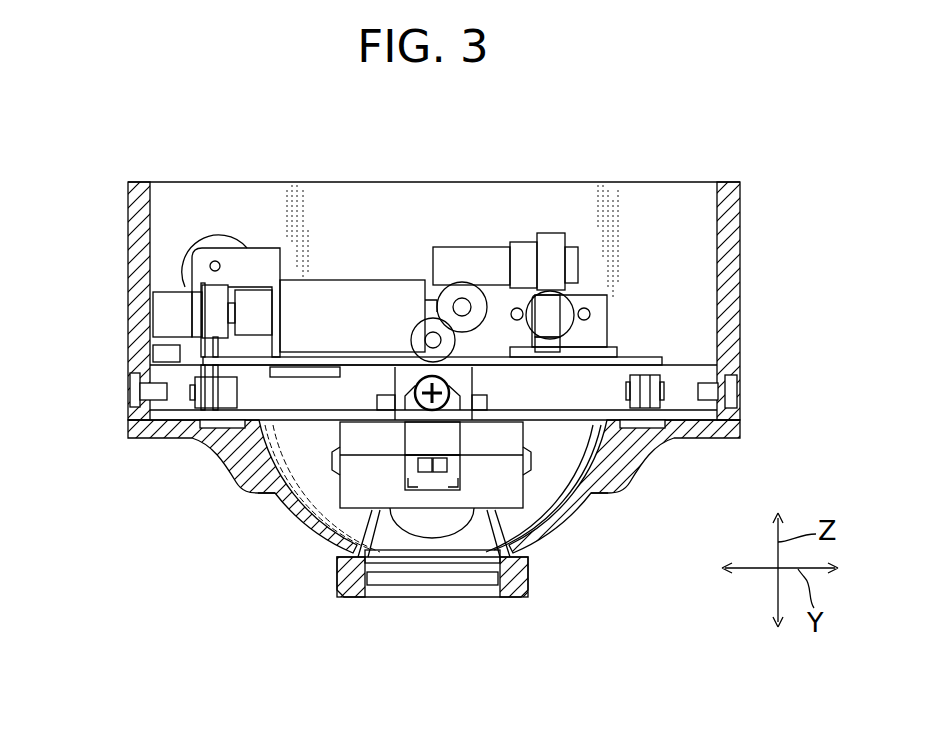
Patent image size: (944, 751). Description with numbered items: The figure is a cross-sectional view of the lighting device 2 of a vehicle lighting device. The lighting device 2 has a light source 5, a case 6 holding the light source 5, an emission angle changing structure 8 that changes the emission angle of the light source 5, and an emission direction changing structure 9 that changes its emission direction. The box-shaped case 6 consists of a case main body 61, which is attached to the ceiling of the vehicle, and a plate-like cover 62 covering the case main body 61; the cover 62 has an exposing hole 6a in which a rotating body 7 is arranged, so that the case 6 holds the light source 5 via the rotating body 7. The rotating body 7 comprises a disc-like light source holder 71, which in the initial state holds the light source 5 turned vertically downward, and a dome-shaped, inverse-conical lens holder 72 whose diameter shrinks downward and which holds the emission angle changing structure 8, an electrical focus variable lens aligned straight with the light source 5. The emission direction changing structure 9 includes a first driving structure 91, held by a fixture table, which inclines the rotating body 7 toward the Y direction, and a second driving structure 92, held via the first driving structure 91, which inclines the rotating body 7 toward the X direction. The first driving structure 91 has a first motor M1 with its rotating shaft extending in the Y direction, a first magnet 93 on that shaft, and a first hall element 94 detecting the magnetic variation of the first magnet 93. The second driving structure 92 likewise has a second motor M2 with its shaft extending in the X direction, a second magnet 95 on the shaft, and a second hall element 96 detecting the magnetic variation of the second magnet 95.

The lighting device 2 is at (773, 159).
The light source 5 is at (517, 553).
The case 6 is at (500, 367).
The case main body 61 is at (739, 340).
The cover 62 is at (717, 440).
The exposing hole 6a is at (268, 493).
The rotating body 7 is at (522, 489).
The light source holder 71 is at (523, 490).
The lens holder 72 is at (520, 543).
The emission angle changing structure 8 is at (448, 600).
The emission direction changing structure 9 is at (368, 282).
The first driving structure 91 is at (330, 277).
The second driving structure 92 is at (583, 277).
The first magnet 93 is at (170, 310).
The first hall element 94 is at (168, 352).
The second magnet 95 is at (550, 315).
The second hall element 96 is at (553, 342).
The first motor M1 is at (365, 297).
The second motor M2 is at (593, 293).